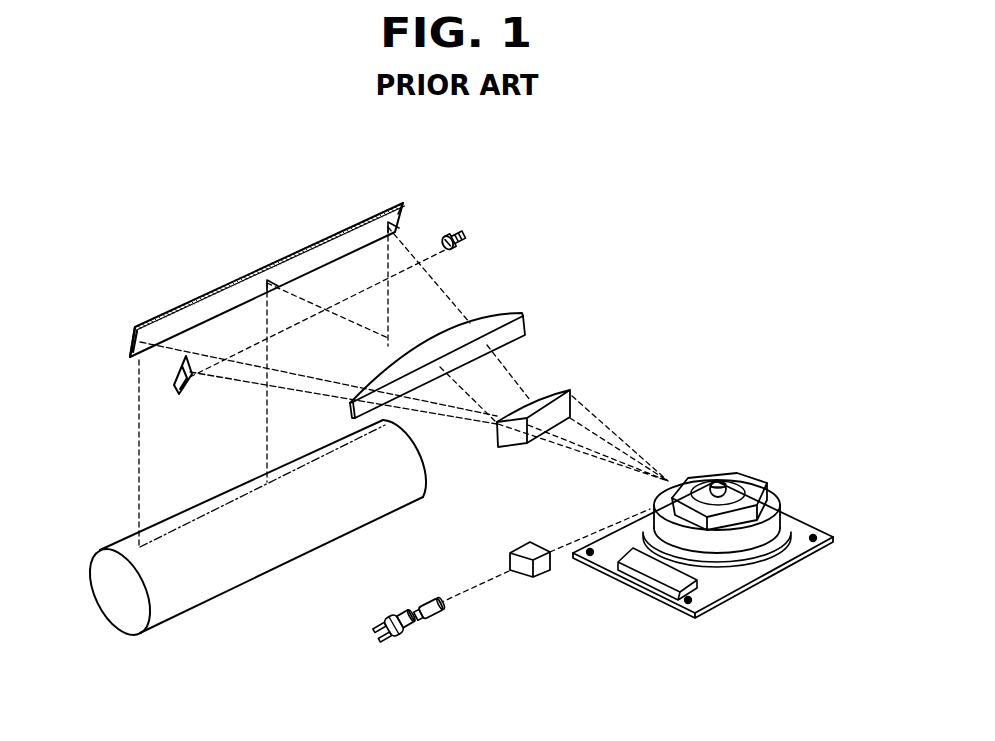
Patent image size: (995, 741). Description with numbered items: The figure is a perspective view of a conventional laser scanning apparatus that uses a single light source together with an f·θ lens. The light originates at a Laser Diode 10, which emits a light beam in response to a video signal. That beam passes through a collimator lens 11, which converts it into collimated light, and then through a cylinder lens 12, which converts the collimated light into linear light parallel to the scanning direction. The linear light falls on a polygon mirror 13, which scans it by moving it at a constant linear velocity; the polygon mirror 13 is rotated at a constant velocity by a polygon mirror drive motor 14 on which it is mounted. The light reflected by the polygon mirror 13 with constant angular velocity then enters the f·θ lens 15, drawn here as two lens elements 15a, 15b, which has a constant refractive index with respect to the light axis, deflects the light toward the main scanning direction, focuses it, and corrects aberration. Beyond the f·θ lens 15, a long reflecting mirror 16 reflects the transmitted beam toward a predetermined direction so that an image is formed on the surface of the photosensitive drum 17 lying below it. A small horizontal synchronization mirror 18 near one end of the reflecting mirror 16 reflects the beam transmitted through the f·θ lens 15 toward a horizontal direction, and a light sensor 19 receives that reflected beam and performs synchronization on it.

The Laser Diode (LD) 10 is at (402, 642).
The collimator lens 11 is at (435, 620).
The cylinder lens 12 is at (549, 578).
The polygon mirror 13 is at (725, 475).
The polygon mirror drive motor 14 is at (777, 492).
The f·θ lens 15 is at (509, 367).
The first lens 15a is at (582, 424).
The second lens 15b is at (503, 318).
The reflecting mirror 16 is at (210, 295).
The photosensitive drum 17 is at (207, 588).
The horizontal synchronization mirror 18 is at (175, 398).
The light sensor 19 is at (460, 232).